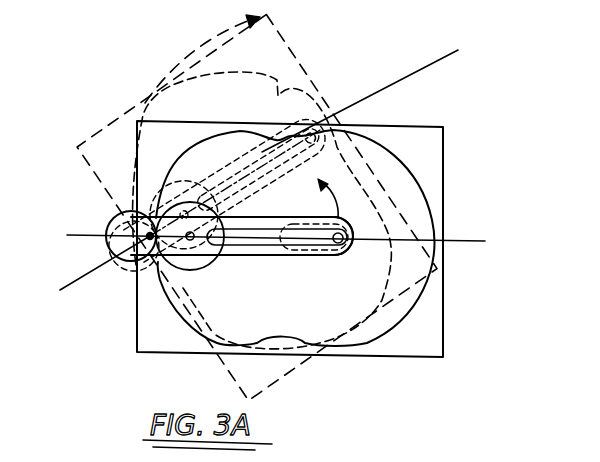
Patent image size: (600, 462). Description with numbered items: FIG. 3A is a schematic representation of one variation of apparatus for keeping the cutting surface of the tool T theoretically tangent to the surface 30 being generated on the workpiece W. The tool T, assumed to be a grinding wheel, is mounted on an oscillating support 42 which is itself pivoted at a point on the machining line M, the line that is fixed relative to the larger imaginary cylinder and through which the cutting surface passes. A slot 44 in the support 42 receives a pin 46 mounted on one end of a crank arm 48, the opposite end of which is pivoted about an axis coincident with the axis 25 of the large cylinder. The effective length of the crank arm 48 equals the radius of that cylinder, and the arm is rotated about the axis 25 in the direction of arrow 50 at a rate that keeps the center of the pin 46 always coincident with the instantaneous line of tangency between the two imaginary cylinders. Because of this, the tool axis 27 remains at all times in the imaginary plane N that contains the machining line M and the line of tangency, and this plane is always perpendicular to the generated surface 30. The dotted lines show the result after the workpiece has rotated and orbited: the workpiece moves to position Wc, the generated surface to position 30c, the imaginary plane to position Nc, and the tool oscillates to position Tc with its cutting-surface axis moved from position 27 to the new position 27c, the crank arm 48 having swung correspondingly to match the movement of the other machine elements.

The generated surface 30 is at (427, 213).
The generated surface in displaced position 30c is at (276, 89).
The workpiece W is at (436, 153).
The workpiece in displaced position Wc is at (294, 55).
The imaginary plane N is at (467, 242).
The imaginary plane in displaced position Nc is at (412, 75).
The tool T is at (187, 254).
The tool in displaced position Tc is at (200, 195).
The machining line M is at (114, 254).
The axis of the cutting surface of the tool 27 is at (152, 278).
The axis of the cutting surface in displaced position 27c is at (134, 193).
The oscillating support 42 is at (110, 228).
The slot 44 is at (252, 256).
The axis of the large cylinder 25 is at (306, 255).
The pin 46 is at (370, 224).
The crank arm 48 is at (330, 252).
The arrow 50 is at (313, 198).